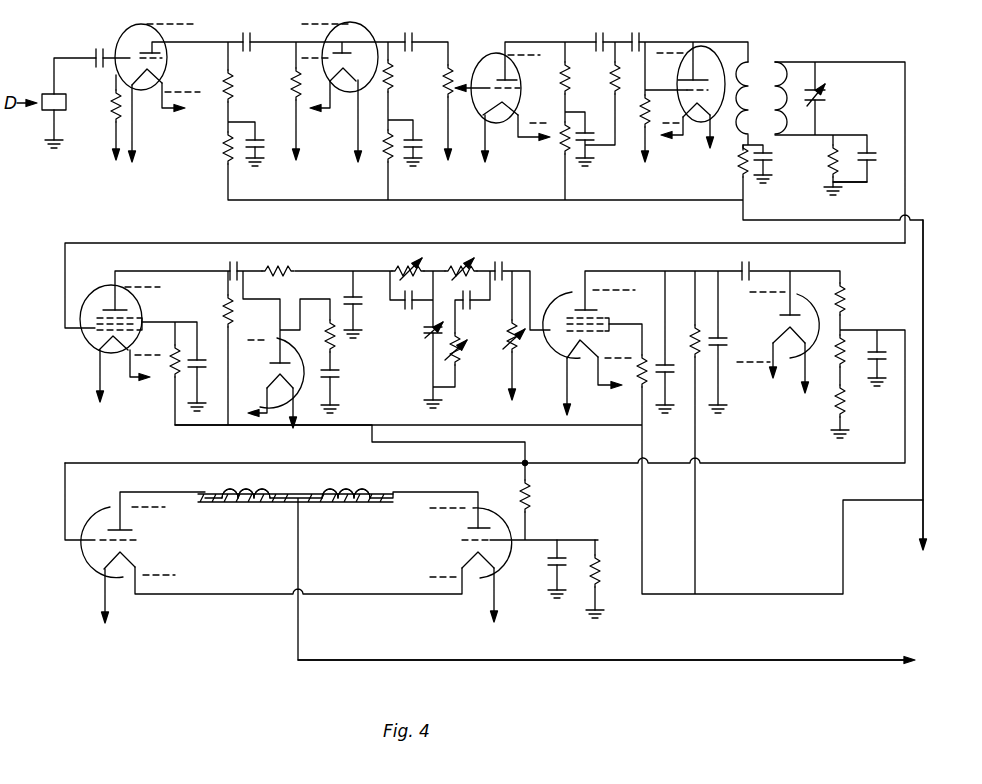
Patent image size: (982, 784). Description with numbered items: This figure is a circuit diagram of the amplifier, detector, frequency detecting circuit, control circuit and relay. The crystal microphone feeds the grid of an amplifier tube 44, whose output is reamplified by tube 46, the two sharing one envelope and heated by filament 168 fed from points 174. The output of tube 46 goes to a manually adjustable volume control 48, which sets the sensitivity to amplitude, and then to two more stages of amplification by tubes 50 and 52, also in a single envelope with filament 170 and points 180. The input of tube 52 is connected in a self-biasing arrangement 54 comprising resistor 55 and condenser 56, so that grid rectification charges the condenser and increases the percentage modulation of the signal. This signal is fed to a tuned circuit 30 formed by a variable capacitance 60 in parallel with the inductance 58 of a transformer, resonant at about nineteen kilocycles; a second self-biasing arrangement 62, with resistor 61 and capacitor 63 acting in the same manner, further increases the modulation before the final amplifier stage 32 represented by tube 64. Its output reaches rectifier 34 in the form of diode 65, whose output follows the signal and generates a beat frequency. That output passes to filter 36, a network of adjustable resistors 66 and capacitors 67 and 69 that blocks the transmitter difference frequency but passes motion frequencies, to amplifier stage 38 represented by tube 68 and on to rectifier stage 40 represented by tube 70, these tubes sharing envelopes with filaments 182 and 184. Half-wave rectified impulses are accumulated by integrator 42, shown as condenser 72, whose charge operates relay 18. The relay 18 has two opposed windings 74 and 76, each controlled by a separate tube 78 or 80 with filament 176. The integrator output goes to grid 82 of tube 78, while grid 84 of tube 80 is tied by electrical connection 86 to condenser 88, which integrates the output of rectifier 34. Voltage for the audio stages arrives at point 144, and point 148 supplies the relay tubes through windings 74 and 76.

The relay 18 is at (294, 492).
The tuned circuit 30 is at (798, 70).
The final amplifier stage 32 is at (97, 288).
The rectifier 34 is at (285, 432).
The filter 36 is at (441, 257).
The amplifier stage 38 is at (588, 257).
The rectifier stage 40 is at (805, 282).
The integrator 42 is at (874, 324).
The amplifier tube 44 is at (128, 40).
The tube 46 is at (352, 33).
The volume control 48 is at (450, 66).
The tube 50 is at (505, 56).
The tube 52 is at (700, 48).
The self-biasing arrangement 54 is at (632, 115).
The resistor 55 is at (650, 105).
The condenser 56 is at (636, 33).
The inductance 58 is at (785, 120).
The capacitance 60 is at (828, 96).
The resistor 61 is at (828, 168).
The self-biasing arrangement 62 is at (847, 168).
The capacitor 63 is at (870, 150).
The tube 64 is at (85, 310).
The diode 65 is at (285, 381).
The resistors 66 is at (404, 262).
The capacitor 67 is at (404, 306).
The tube 68 is at (460, 352).
The capacitors 69 is at (505, 263).
The tube 70 is at (823, 373).
The condenser 72 is at (887, 356).
The winding 74 is at (243, 507).
The winding 76 is at (343, 505).
The tube 78 is at (103, 517).
The tube 80 is at (492, 515).
The grid 82 is at (97, 562).
The grid 84 is at (489, 548).
The electrical connection 86 is at (531, 446).
The condenser 88 is at (335, 383).
The point 144 is at (947, 392).
The point 148 is at (630, 665).
The filament 168 is at (160, 74).
The filament 170 is at (507, 122).
The point 174 is at (116, 157).
The filament 176 is at (132, 560).
The point 180 is at (448, 157).
The filament 182 is at (100, 347).
The filament 184 is at (564, 365).